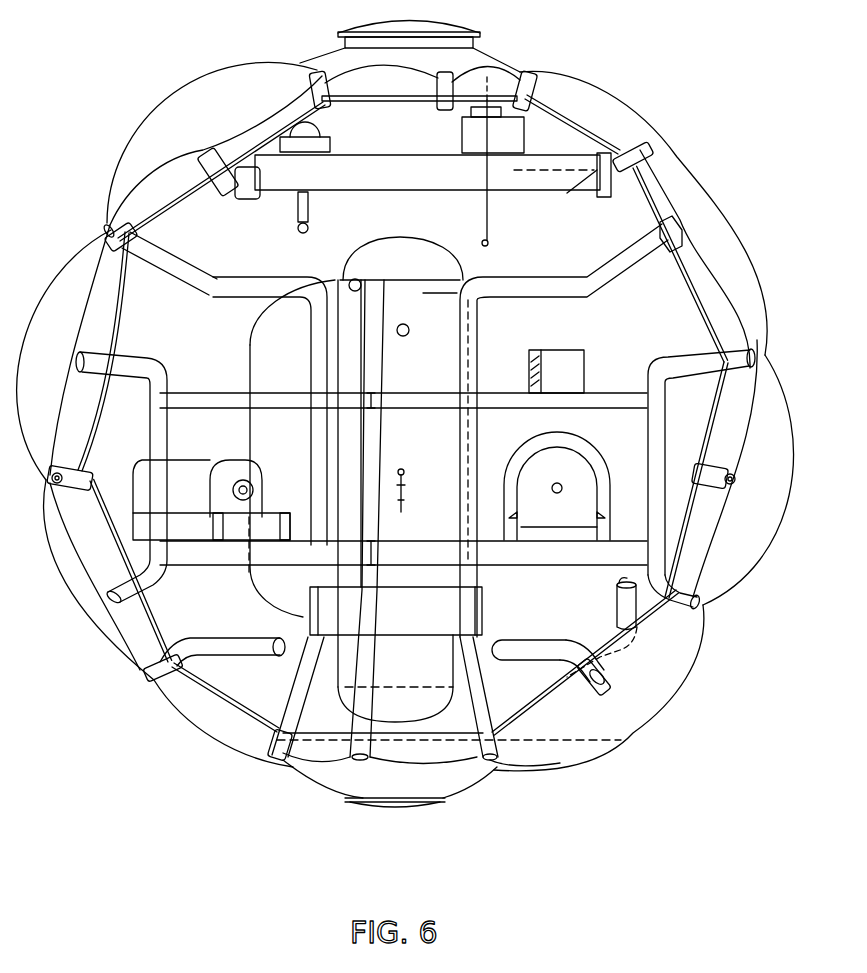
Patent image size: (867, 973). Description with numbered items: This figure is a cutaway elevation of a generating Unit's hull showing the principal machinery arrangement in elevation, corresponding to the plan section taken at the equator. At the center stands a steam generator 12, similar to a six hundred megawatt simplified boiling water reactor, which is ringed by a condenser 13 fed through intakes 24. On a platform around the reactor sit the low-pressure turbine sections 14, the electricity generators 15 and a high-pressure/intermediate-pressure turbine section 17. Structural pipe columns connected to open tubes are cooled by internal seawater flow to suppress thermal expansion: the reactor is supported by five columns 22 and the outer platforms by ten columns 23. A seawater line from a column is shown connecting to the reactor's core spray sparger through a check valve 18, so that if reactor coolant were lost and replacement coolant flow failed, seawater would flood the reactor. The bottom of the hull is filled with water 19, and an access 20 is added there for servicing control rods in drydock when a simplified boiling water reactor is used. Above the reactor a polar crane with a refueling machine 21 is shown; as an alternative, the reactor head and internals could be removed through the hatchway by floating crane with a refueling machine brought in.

The steam generator 12 is at (434, 377).
The condenser 13 is at (272, 342).
The LP turbine section 14 is at (574, 444).
The electricity generator 15 is at (585, 521).
The HP/IP turbine section 17 is at (184, 468).
The check valve 18 is at (405, 486).
The water 19 is at (567, 740).
The access 20 is at (373, 810).
The polar crane with a refueling machine 21 is at (419, 187).
The column 22 is at (475, 356).
The column 23 is at (662, 374).
The intake 24 is at (541, 643).